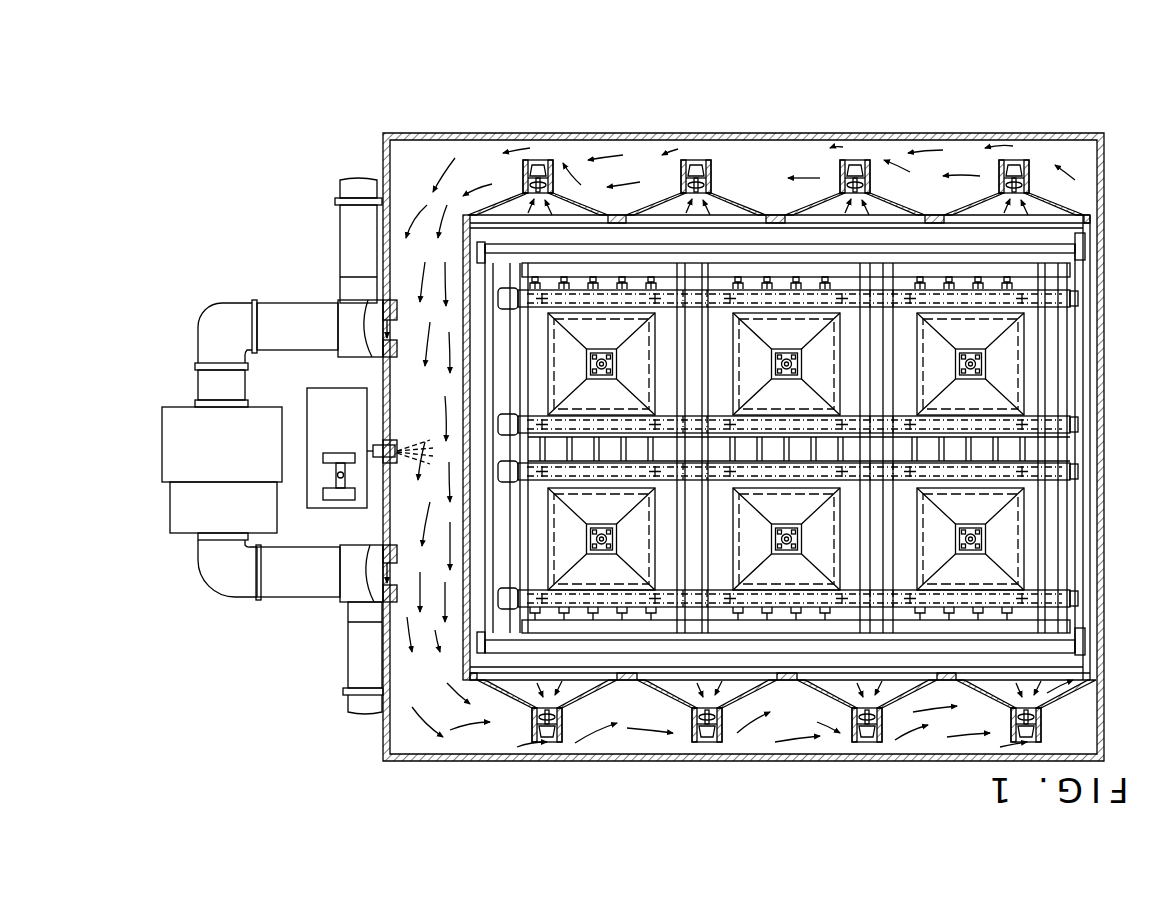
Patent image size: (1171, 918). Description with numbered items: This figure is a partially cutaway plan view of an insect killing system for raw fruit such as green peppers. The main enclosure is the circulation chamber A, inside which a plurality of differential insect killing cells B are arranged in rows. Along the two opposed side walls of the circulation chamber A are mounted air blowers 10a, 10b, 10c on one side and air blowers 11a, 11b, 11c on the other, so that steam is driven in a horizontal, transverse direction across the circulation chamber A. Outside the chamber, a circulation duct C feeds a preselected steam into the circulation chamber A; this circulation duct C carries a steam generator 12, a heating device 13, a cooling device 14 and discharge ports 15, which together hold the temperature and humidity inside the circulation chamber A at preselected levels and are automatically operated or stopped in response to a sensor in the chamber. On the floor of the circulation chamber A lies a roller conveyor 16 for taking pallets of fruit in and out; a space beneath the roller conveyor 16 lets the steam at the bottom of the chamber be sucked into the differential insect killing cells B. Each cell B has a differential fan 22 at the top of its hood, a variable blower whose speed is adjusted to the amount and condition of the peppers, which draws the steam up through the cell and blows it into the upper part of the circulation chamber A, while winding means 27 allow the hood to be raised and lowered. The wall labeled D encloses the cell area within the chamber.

The circulation chamber A is at (1100, 604).
The differential insect killing cell B is at (1030, 368).
The circulation duct C is at (398, 158).
The inner muffle wall D is at (1100, 432).
The air blower 10a is at (550, 742).
The air blower 10b is at (708, 742).
The air blower 10c is at (866, 742).
The air blower 11a is at (538, 160).
The air blower 11b is at (696, 160).
The air blower 11c is at (855, 160).
The steam generator 12 is at (325, 398).
The heating device 13 is at (170, 418).
The cooling device 14 is at (223, 507).
The discharge port 15 is at (345, 190).
The roller conveyor 16 is at (1040, 450).
The differential fan 22 is at (587, 368).
The winding means 27 is at (1040, 298).